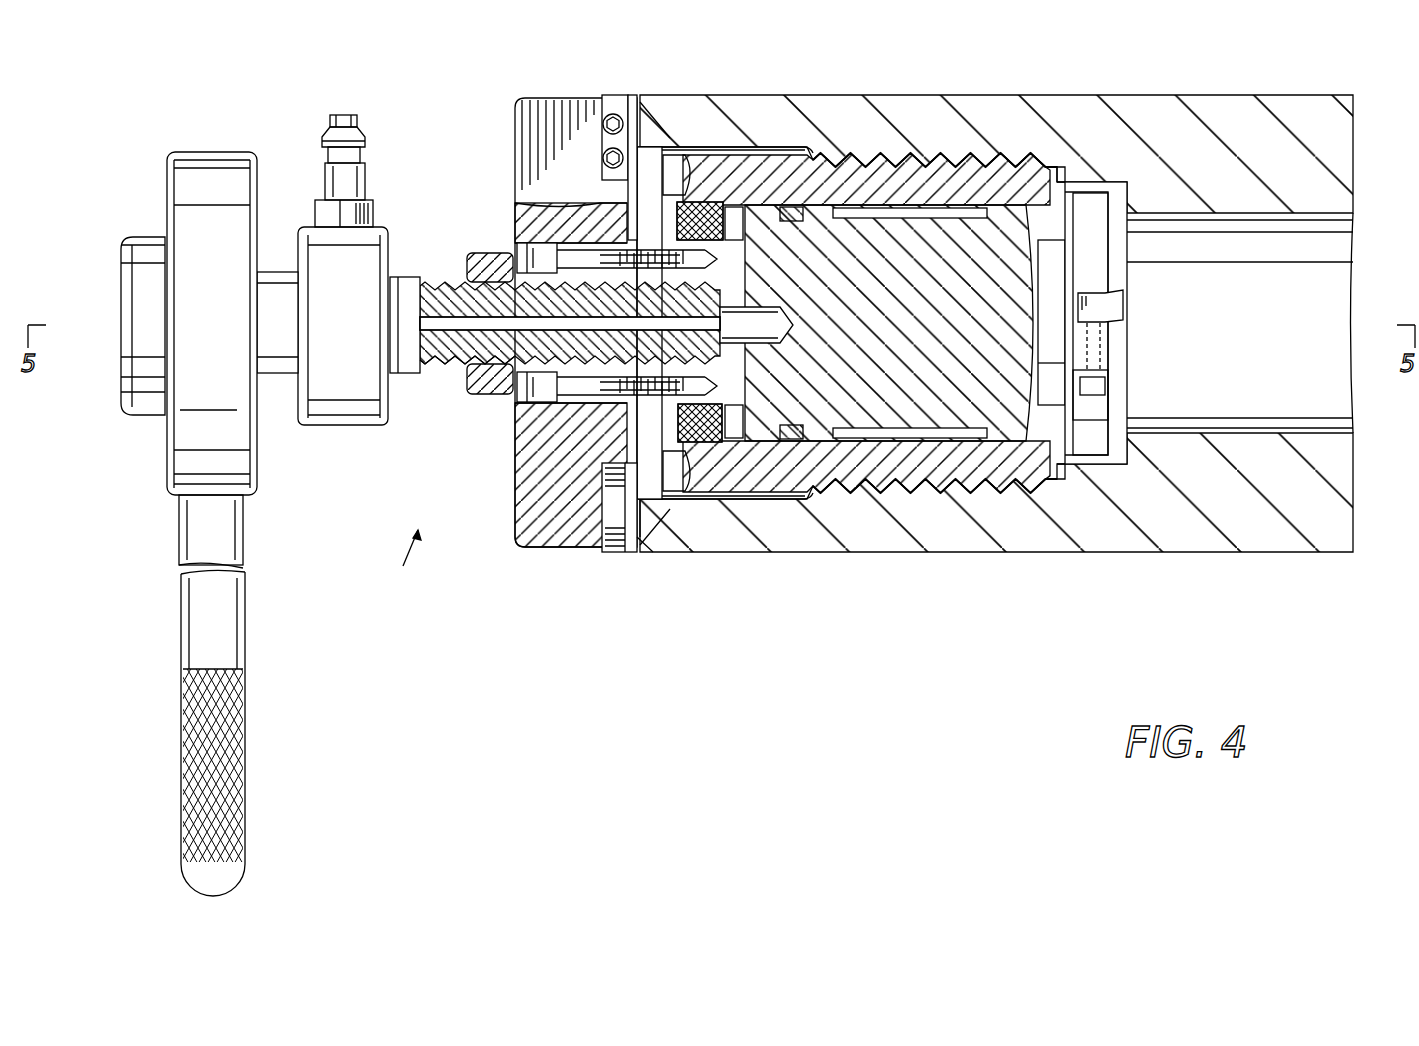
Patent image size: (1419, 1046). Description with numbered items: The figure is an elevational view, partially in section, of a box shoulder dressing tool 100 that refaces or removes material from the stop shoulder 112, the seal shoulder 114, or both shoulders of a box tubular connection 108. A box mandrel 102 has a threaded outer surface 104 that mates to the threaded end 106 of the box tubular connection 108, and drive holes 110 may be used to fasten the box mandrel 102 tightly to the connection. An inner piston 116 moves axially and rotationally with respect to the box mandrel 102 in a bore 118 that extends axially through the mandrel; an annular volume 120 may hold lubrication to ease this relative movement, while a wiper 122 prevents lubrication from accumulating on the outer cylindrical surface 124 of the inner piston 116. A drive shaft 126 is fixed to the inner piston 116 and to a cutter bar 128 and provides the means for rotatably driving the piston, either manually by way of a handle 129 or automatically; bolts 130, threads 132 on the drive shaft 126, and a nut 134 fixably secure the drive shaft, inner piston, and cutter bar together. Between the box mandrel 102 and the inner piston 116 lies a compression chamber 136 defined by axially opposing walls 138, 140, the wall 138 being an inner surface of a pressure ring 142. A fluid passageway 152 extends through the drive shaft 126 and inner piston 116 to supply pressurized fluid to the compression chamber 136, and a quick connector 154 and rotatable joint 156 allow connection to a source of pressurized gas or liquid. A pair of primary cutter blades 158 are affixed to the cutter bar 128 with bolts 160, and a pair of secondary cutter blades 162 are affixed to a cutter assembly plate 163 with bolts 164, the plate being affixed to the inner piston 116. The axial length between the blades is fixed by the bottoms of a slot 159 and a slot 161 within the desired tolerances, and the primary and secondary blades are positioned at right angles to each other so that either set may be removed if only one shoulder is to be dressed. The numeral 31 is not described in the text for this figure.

The handwheel 31 is at (182, 178).
The box shoulder dressing tool 100 is at (395, 560).
The box mandrel 102 is at (760, 180).
The threaded outer surface 104 is at (922, 168).
The threaded end 106 is at (855, 127).
The box tubular connection 108 is at (1197, 135).
The drive holes 110 is at (675, 150).
The stop shoulder 112 is at (1127, 410).
The seal shoulder 114 is at (645, 540).
The inner piston 116 is at (915, 395).
The bore 118 is at (1030, 190).
The annular volume 120 is at (960, 445).
The wiper 122 is at (1047, 440).
The outer cylindrical surface 124 is at (1066, 182).
The drive shaft 126 is at (440, 367).
The cutter bar 128 is at (530, 527).
The handle 129 is at (233, 772).
The bolts 130 is at (540, 250).
The threads 132 is at (435, 281).
The nut 134 is at (492, 385).
The compression chamber 136 is at (745, 443).
The wall 138 is at (734, 438).
The wall 140 is at (765, 428).
The pressure ring 142 is at (708, 203).
The fluid passageway 152 is at (493, 318).
The quick connector 154 is at (338, 115).
The rotatable joint 156 is at (323, 245).
The primary cutter blades 158 is at (618, 535).
The slot 159 is at (590, 517).
The bolts 160 is at (602, 117).
The slot 161 is at (1100, 345).
The secondary cutter blades 162 is at (1112, 308).
The cutter assembly plate 163 is at (1092, 232).
The bolts 164 is at (1097, 370).